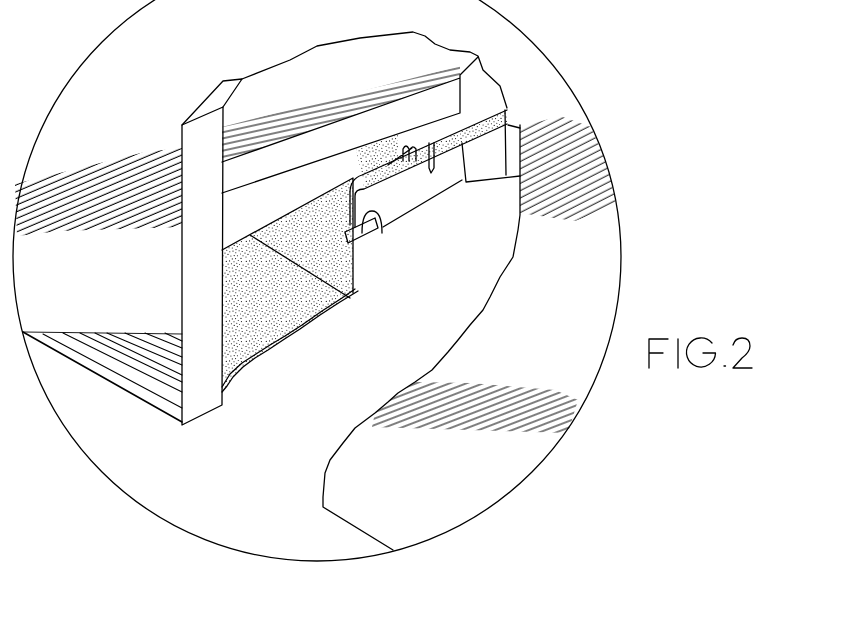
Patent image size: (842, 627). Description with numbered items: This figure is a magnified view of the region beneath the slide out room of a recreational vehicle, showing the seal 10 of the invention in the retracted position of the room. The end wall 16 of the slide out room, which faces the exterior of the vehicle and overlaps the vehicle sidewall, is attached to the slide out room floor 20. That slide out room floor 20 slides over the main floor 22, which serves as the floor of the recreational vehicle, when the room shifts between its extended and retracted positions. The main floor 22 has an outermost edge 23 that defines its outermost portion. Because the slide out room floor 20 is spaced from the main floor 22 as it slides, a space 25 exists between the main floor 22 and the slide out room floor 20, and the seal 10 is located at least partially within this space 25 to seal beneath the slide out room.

The seal 10 is at (306, 347).
The end wall 16 is at (156, 82).
The slide out room floor 20 is at (352, 79).
The main floor 22 is at (413, 208).
The outermost edge 23 is at (347, 232).
The space 25 is at (473, 187).